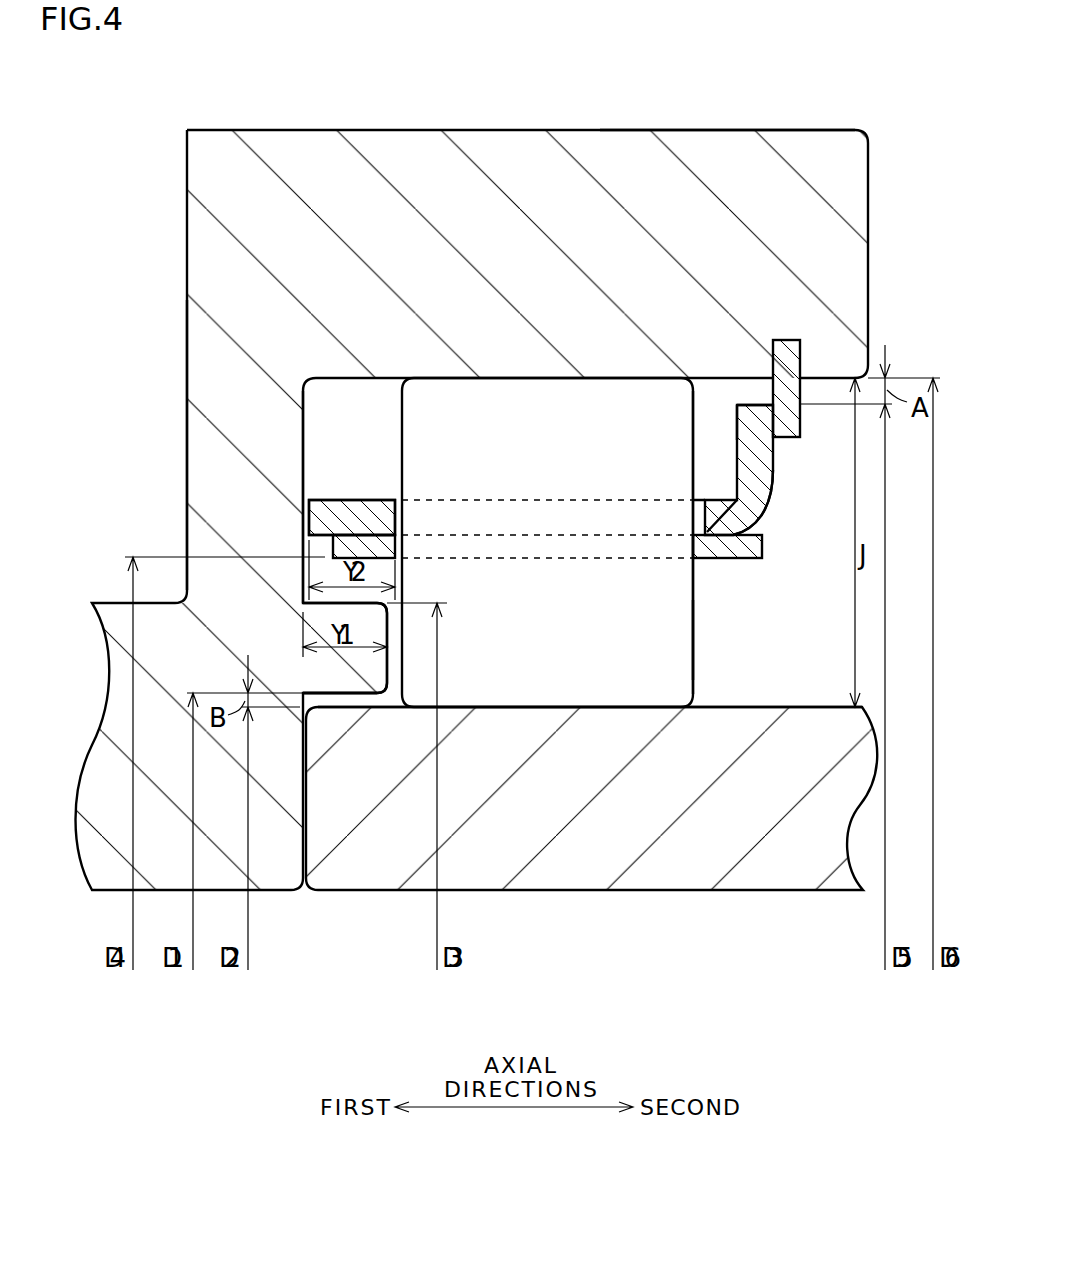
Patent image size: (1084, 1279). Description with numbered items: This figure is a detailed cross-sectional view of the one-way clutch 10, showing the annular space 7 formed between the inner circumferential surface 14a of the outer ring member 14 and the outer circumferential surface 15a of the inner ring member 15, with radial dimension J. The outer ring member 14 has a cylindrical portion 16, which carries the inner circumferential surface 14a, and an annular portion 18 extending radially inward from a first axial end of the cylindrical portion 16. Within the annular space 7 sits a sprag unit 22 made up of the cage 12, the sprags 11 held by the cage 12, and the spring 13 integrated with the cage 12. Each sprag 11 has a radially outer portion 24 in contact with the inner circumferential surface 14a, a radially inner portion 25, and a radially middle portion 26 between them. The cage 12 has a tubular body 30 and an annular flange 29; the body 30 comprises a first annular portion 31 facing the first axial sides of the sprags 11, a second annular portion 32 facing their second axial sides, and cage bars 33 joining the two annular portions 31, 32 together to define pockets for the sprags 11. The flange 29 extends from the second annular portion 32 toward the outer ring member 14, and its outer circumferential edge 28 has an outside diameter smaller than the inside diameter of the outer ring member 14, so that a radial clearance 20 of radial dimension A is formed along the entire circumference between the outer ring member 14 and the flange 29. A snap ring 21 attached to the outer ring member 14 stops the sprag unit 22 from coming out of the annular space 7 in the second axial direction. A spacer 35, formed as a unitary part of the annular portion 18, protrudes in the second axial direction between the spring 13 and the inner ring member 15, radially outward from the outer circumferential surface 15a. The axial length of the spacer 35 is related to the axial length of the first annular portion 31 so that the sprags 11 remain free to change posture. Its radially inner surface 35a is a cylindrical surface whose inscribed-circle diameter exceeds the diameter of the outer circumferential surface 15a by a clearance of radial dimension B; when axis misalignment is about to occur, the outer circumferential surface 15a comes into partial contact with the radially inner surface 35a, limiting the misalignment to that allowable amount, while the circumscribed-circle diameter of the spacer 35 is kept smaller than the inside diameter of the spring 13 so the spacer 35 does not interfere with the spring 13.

The annular space 7 is at (734, 668).
The one-way clutch 10 is at (838, 115).
The sprag 11 is at (695, 625).
The cage 12 is at (782, 465).
The spring 13 is at (762, 547).
The outer ring member 14 is at (392, 130).
The inner circumferential surface 14a is at (457, 378).
The inner ring member 15 is at (553, 890).
The outer circumferential surface 15a is at (528, 707).
The cylindrical portion 16 is at (525, 160).
The annular portion 18 is at (208, 462).
The radial clearance 20 is at (728, 397).
The snap ring 21 is at (787, 348).
The sprag unit 22 is at (378, 412).
The radially outer portion 24 is at (538, 400).
The radially inner portion 25 is at (597, 673).
The radially middle portion 26 is at (632, 550).
The outer circumferential edge 28 is at (760, 404).
The flange 29 is at (753, 452).
The body 30 is at (380, 502).
The first annular portion 31 is at (350, 518).
The second annular portion 32 is at (745, 518).
The cage bar 33 is at (575, 512).
The spacer 35 is at (357, 670).
The radially inner surface 35a is at (340, 697).